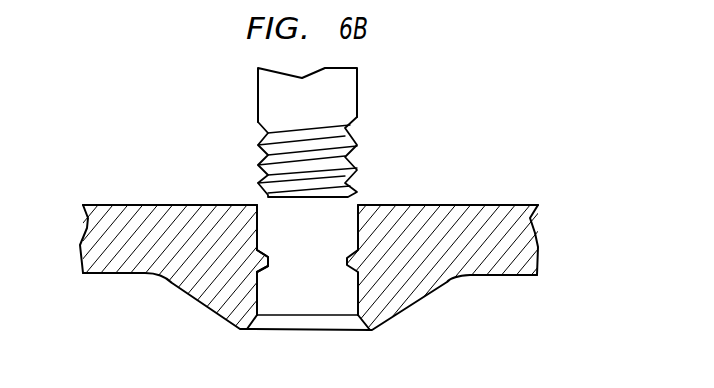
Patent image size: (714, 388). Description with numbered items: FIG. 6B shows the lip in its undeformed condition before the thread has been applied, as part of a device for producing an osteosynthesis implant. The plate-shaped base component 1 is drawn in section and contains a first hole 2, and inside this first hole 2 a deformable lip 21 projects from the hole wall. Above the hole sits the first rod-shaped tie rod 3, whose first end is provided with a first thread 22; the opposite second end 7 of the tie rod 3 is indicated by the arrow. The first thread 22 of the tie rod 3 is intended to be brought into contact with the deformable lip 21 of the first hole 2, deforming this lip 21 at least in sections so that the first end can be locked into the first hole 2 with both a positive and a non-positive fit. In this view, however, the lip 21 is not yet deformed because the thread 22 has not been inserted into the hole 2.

The plate-shaped base component 1 is at (512, 205).
The first hole 2 is at (338, 303).
The deformable lip 21 is at (262, 259).
The first rod-shaped tie rod 3 is at (343, 96).
The first thread 22 is at (345, 147).
The second end 7 is at (302, 164).